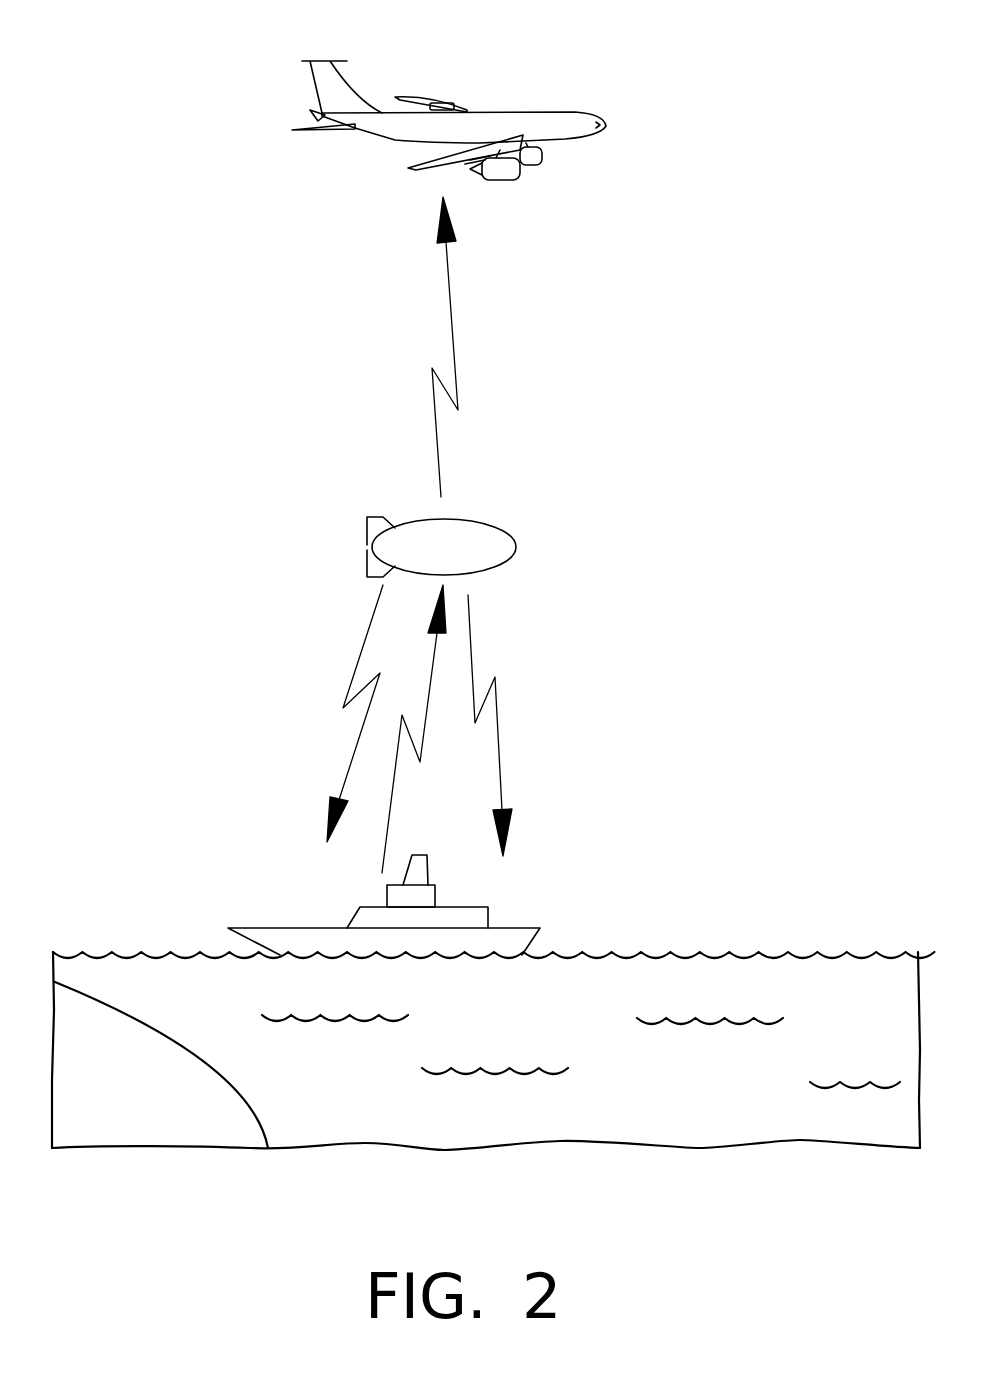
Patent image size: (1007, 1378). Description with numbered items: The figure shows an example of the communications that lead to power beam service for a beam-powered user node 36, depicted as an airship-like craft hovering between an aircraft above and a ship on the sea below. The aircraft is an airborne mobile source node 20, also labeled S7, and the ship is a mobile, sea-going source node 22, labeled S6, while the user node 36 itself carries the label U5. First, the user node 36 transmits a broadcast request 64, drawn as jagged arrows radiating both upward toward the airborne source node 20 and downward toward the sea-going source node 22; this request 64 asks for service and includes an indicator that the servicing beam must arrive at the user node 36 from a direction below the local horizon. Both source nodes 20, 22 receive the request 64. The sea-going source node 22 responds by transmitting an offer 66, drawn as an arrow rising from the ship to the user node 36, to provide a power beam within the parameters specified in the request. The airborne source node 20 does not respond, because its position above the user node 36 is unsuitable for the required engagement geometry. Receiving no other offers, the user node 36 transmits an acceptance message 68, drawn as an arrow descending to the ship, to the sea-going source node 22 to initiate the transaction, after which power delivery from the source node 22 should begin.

The airborne mobile source node 20 is at (518, 110).
The sea-going mobile source node 22 is at (520, 927).
The beam-powered user node 36 is at (485, 520).
The broadcast request 64 is at (452, 315).
The offer 66 is at (377, 837).
The acceptance message 68 is at (473, 658).
The airborne station S7 is at (360, 140).
The unmanned platform U5 is at (410, 520).
The surface station S6 is at (260, 928).